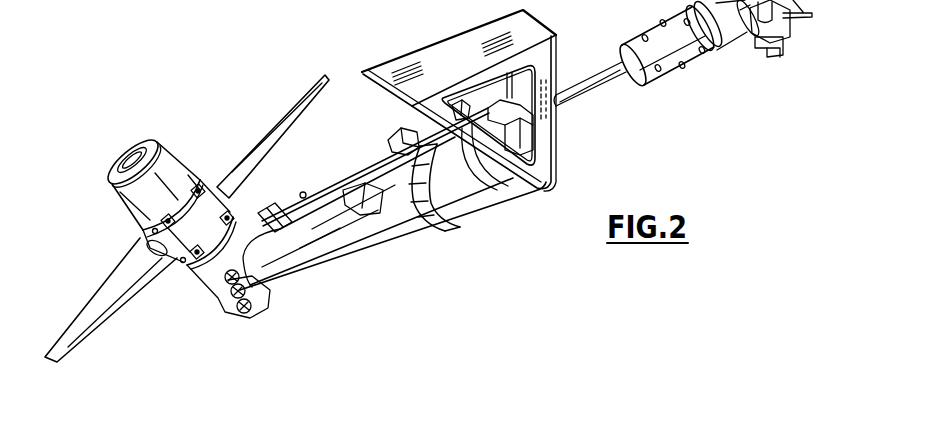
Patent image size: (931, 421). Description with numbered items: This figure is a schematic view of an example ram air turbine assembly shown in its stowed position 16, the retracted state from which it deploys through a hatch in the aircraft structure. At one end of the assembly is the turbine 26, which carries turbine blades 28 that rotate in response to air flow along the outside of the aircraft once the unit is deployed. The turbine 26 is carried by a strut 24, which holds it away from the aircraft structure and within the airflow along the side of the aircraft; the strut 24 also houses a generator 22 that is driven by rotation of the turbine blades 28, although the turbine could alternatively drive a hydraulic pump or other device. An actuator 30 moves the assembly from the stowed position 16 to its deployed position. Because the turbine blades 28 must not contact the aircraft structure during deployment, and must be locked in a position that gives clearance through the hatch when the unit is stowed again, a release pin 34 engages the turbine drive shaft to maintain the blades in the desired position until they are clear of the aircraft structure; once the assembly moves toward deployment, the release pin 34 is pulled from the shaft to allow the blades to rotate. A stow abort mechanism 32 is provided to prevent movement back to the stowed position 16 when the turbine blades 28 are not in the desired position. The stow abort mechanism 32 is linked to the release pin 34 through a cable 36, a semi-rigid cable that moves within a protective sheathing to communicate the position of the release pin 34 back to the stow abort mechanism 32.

The stowed position 16 is at (336, 316).
The generator 22 is at (495, 215).
The strut 24 is at (375, 150).
The turbine 26 is at (110, 148).
The turbine blades 28 is at (98, 311).
The actuator 30 is at (667, 60).
The stow abort mechanism 32 is at (538, 133).
The release pin 34 is at (291, 235).
The cable 36 is at (395, 180).